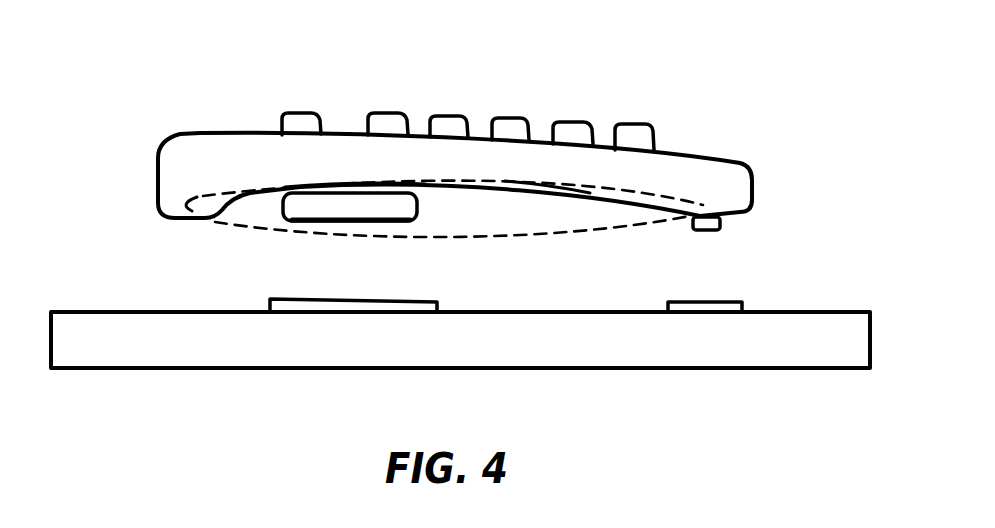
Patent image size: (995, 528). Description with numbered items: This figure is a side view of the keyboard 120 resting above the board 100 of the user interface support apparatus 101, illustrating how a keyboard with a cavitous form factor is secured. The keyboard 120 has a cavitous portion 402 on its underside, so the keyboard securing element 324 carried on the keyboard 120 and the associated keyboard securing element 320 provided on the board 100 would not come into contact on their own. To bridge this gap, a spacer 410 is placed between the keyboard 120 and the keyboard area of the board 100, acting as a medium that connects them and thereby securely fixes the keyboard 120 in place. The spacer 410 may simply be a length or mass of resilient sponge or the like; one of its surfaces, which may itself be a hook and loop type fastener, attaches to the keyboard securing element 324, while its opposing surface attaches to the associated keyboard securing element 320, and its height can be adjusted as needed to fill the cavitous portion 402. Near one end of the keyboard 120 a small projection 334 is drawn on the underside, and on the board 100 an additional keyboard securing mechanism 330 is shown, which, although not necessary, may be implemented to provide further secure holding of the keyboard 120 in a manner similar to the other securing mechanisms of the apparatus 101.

The user interface support apparatus 101 is at (72, 83).
The keyboard 120 is at (198, 134).
The keyboard securing element 324 is at (427, 182).
The cavitous portion 402 is at (515, 180).
The spacer 410 is at (418, 209).
The tab / connector 334 is at (690, 232).
The board 100 is at (838, 312).
The associated keyboard securing element 320 is at (437, 311).
The additional keyboard securing mechanism 330 is at (697, 301).